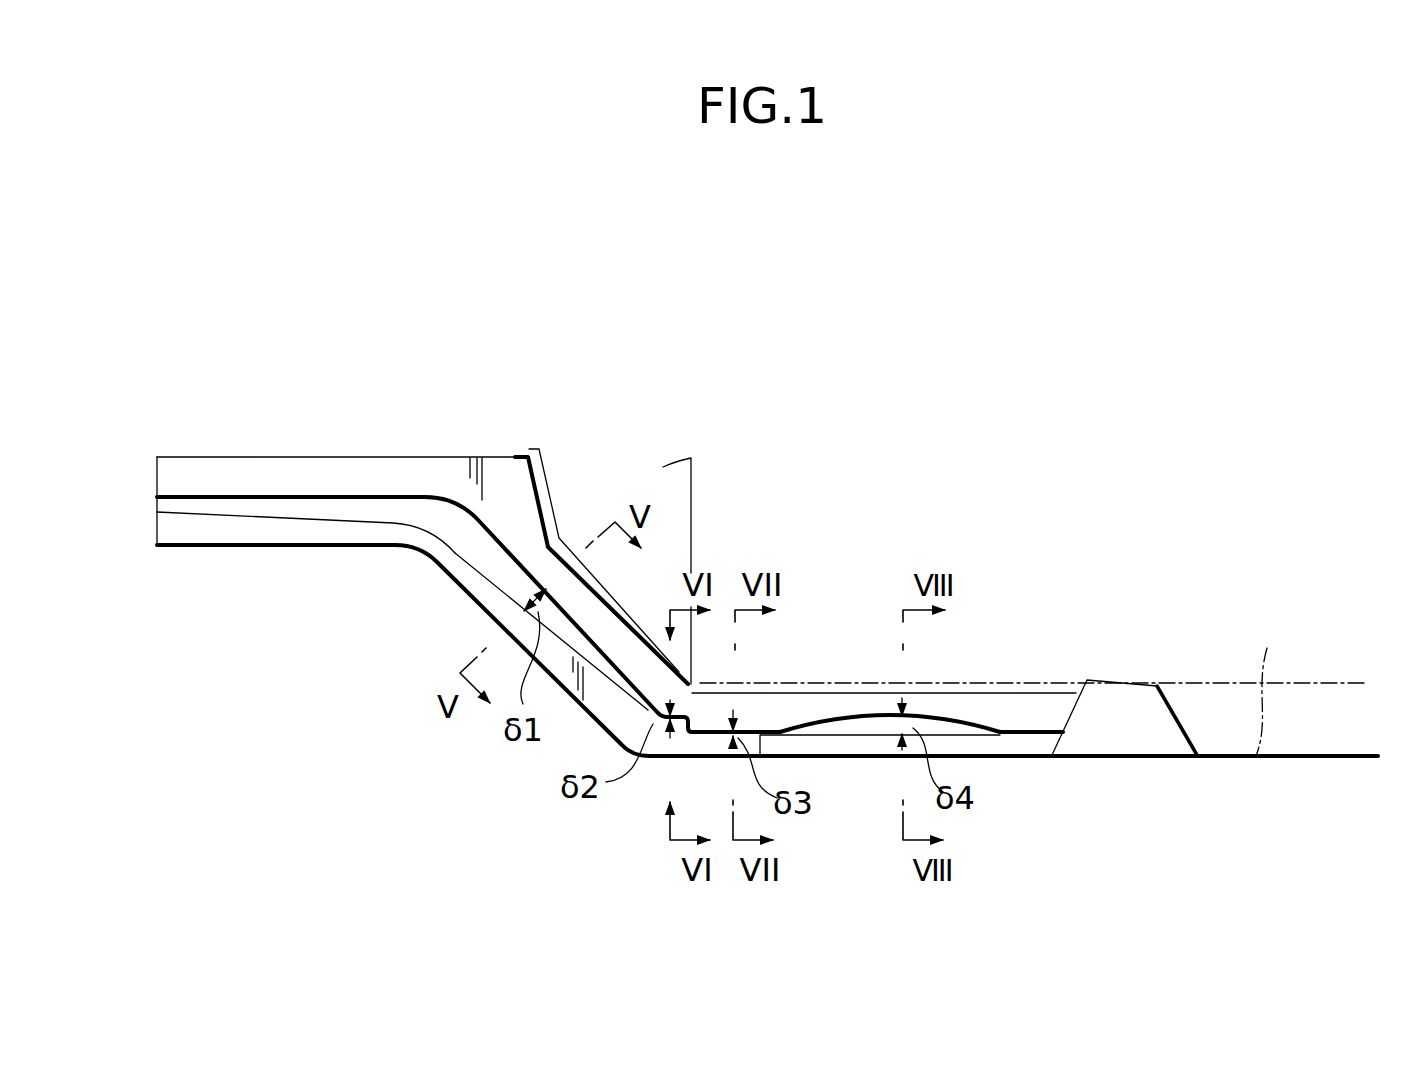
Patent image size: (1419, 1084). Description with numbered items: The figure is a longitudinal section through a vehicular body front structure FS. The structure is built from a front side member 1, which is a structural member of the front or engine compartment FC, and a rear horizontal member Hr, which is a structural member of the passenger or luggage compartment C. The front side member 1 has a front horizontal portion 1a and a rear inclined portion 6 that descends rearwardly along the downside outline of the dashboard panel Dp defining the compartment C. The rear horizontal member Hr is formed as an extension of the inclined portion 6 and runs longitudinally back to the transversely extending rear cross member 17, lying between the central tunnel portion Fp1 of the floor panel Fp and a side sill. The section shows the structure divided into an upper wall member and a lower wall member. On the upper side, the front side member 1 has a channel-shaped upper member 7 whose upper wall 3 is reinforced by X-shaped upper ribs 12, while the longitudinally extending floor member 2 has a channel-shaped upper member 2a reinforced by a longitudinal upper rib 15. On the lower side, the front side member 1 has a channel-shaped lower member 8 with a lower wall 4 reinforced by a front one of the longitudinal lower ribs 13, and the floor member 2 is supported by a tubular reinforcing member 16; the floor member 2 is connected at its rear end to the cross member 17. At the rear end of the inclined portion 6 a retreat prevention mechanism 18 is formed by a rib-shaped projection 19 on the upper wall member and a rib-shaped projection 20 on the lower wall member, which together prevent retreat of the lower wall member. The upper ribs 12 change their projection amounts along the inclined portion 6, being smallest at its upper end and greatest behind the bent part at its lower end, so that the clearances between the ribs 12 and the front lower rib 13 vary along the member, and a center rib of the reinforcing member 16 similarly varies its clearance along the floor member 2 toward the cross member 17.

The front side member 1 is at (313, 420).
The front horizontal portion 1a is at (343, 552).
The floor member 2 is at (1015, 660).
The upper member of the floor member 2a is at (966, 693).
The upper wall 3 is at (365, 458).
The lower wall 4 is at (283, 546).
The rear inclined portion 6 is at (600, 598).
The upper member 7 is at (222, 457).
The lower member 8 is at (207, 546).
The upper ribs 12 is at (452, 490).
The longitudinal lower ribs 13 is at (420, 550).
The longitudinal upper rib 15 is at (835, 696).
The tubular reinforcing member 16 is at (865, 762).
The rear cross member 17 is at (1133, 690).
The retreat prevention mechanism 18 is at (658, 708).
The rib-shaped projection 19 is at (694, 716).
The rib-shaped projection 20 is at (677, 731).
The dashboard panel Dp is at (553, 487).
The rear horizontal member Hr is at (783, 683).
The floor panel Fp is at (1276, 687).
The central tunnel portion Fp1 is at (870, 683).
The front compartment FC is at (452, 332).
The vehicular body front structure FS is at (865, 283).
The compartment C is at (872, 498).